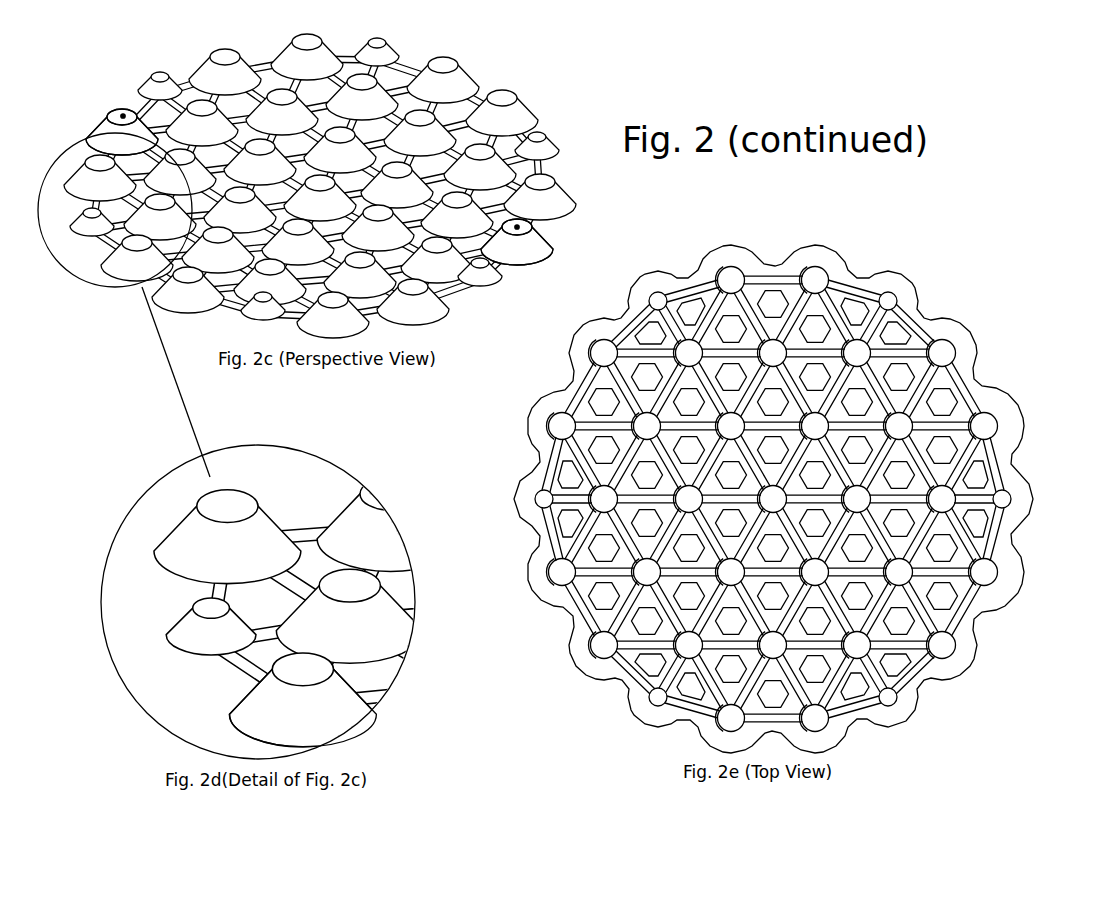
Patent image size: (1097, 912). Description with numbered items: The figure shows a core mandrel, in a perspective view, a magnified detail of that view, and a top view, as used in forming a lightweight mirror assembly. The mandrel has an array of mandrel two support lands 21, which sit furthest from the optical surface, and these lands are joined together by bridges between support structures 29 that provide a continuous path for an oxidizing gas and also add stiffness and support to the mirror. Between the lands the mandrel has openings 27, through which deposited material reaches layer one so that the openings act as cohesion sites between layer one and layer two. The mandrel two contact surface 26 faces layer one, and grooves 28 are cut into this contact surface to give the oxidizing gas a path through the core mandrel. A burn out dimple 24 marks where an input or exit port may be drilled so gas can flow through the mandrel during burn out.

In FIG. 2d, the mandrel two support land 21 is at (305, 662).
In FIG. 2c, the burn out dimple 24 is at (123, 116).
In FIG. 2e, the mandrel two contact surface 26 is at (585, 653).
In FIG. 2e, the openings in mandrel two 27 is at (814, 328).
In FIG. 2e, the grooves in mandrel two 28 is at (557, 520).
In FIG. 2c, the bridges between support structures 29 is at (378, 318).
In FIG. 2d, the bridges between support structures 29 is at (253, 668).